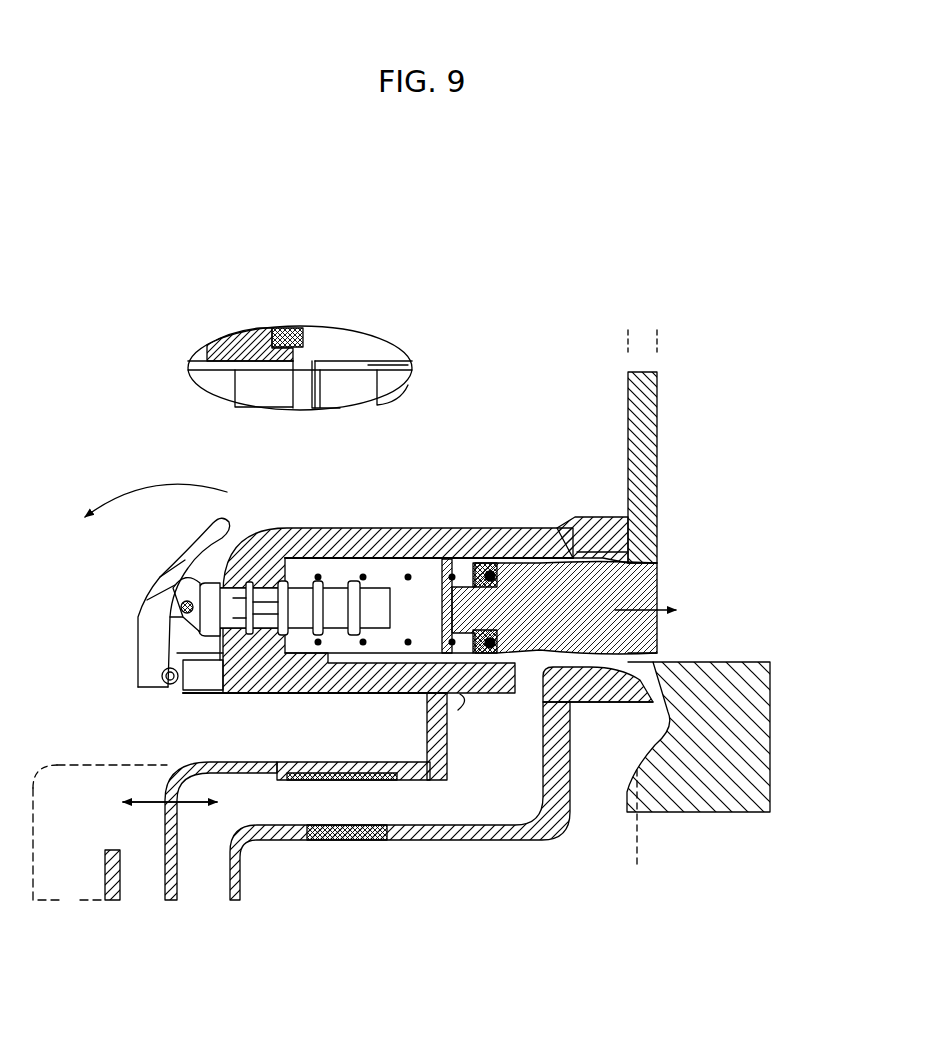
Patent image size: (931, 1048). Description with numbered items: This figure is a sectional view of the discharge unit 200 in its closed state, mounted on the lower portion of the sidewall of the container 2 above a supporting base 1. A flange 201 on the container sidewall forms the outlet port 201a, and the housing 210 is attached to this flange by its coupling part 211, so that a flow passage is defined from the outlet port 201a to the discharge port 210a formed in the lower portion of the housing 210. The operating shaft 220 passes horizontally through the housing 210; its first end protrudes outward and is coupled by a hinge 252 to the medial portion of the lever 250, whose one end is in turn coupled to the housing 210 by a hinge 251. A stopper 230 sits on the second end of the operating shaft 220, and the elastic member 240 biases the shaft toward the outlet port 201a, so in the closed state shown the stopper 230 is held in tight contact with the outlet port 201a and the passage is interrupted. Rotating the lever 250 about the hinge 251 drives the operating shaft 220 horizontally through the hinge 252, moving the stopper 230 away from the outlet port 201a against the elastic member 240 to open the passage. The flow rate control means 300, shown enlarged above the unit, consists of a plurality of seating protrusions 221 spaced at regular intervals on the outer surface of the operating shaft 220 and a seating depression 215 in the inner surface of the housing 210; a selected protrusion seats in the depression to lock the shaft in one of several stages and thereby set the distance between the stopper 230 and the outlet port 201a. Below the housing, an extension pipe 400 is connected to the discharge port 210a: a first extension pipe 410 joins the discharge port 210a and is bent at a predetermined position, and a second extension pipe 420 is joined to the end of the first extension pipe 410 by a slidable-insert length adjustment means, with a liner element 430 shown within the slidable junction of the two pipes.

The base / support wall 1 is at (707, 812).
The container 2 is at (657, 442).
The discharge unit 200 is at (182, 444).
The flange 201 is at (657, 551).
The outlet port 201a is at (662, 590).
The housing 210 is at (256, 318).
The discharge port 210a is at (426, 702).
The coupling part 211 is at (590, 519).
The seating depression 215 is at (213, 347).
The operating shaft 220 is at (355, 369).
The seating protrusions 221 is at (312, 358).
The stopper 230 is at (533, 557).
The elastic member 240 is at (452, 555).
The lever 250 is at (172, 554).
The hinge 251 is at (169, 686).
The hinge 252 is at (181, 612).
The flow rate control means 300 is at (302, 378).
The extension pipe 400 is at (343, 835).
The first extension pipe 410 is at (505, 847).
The second extension pipe 420 is at (120, 848).
The pipe liner plate 430 is at (362, 852).